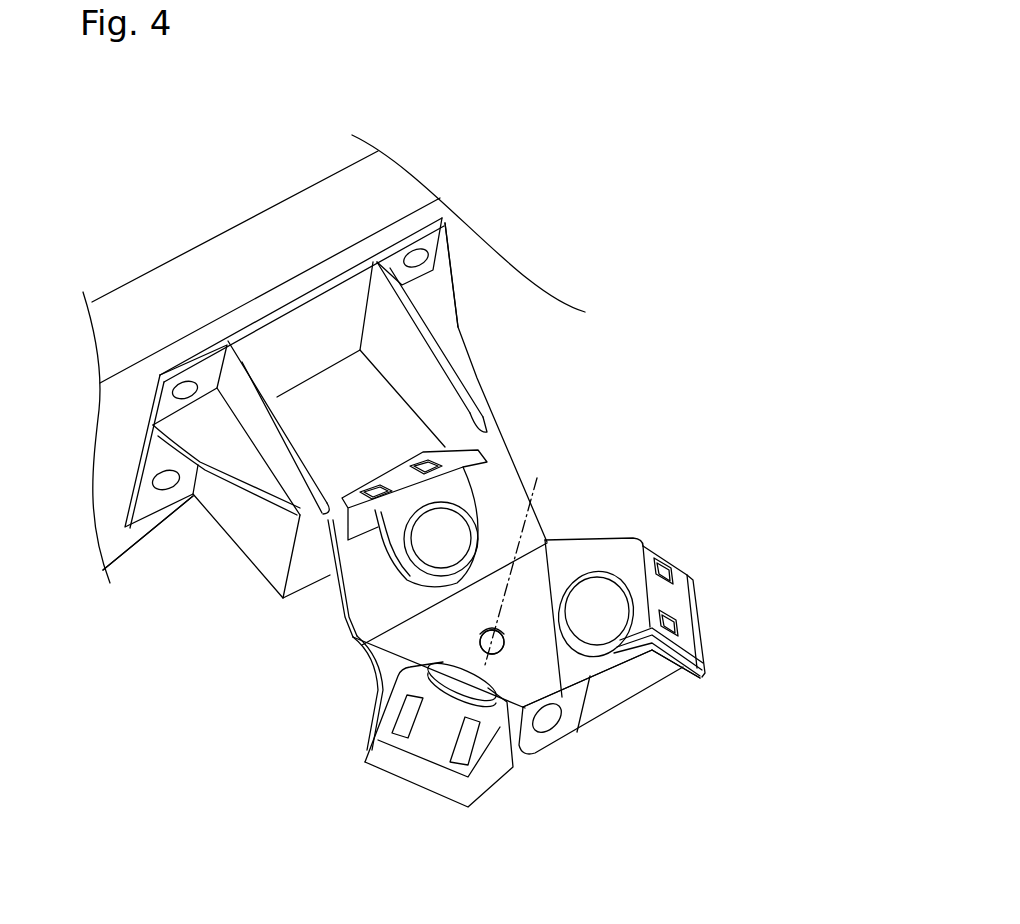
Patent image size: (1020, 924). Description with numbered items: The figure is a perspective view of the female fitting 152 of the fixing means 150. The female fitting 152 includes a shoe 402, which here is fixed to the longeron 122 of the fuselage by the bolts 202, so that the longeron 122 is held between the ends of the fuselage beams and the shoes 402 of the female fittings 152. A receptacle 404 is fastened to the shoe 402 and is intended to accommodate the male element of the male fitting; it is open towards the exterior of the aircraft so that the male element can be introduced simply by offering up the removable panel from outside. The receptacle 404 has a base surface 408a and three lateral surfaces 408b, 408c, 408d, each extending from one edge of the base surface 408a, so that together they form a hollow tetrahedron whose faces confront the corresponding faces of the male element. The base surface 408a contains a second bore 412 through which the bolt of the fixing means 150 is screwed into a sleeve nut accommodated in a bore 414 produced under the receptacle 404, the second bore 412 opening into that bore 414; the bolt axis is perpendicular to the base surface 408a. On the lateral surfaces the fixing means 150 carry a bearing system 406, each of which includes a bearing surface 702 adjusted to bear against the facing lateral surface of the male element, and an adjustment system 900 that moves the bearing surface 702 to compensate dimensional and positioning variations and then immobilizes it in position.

The longeron 122 is at (440, 210).
The bolts 202 is at (428, 258).
The fixing means 150 is at (606, 353).
The receptacle 404 is at (676, 445).
The lateral surface 408c is at (495, 493).
The lateral surface 408b is at (580, 557).
The adjustment system 900 is at (713, 565).
The shoe 402 is at (242, 513).
The base surface 408a is at (465, 653).
The lateral surface 408d is at (390, 662).
The female fitting 152 is at (219, 696).
The bearing surface 702 is at (602, 613).
The bore 414 is at (549, 722).
The bearing system 406 is at (656, 752).
The second bore 412 is at (495, 653).